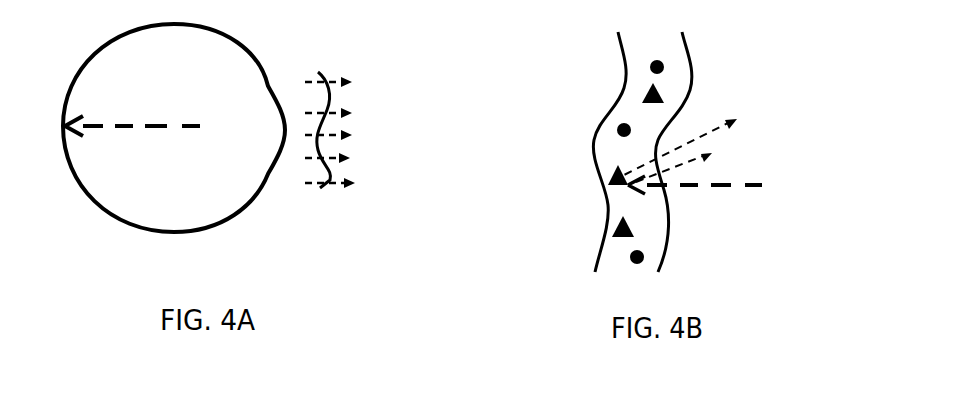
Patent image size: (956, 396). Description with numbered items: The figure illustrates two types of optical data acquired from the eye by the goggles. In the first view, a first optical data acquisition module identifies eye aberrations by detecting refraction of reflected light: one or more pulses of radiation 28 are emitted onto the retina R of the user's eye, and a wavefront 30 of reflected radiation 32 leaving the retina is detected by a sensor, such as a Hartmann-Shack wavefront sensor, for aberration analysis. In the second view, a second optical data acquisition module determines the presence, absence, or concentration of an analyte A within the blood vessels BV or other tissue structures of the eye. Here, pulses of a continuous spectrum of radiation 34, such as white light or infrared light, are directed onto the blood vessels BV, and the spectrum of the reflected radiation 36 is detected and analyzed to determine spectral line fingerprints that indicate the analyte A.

In FIG. 4A, the pulses of radiation 28 is at (138, 125).
In FIG. 4A, the wavefront 30 is at (318, 72).
In FIG. 4A, the reflected radiation 32 is at (348, 116).
In FIG. 4B, the continuous spectrum of radiation 34 is at (755, 183).
In FIG. 4B, the reflected radiation 36 is at (713, 128).
In FIG. 4A, the retina R is at (104, 208).
In FIG. 4B, the analyte A is at (620, 172).
In FIG. 4B, the blood vessels BV is at (637, 50).